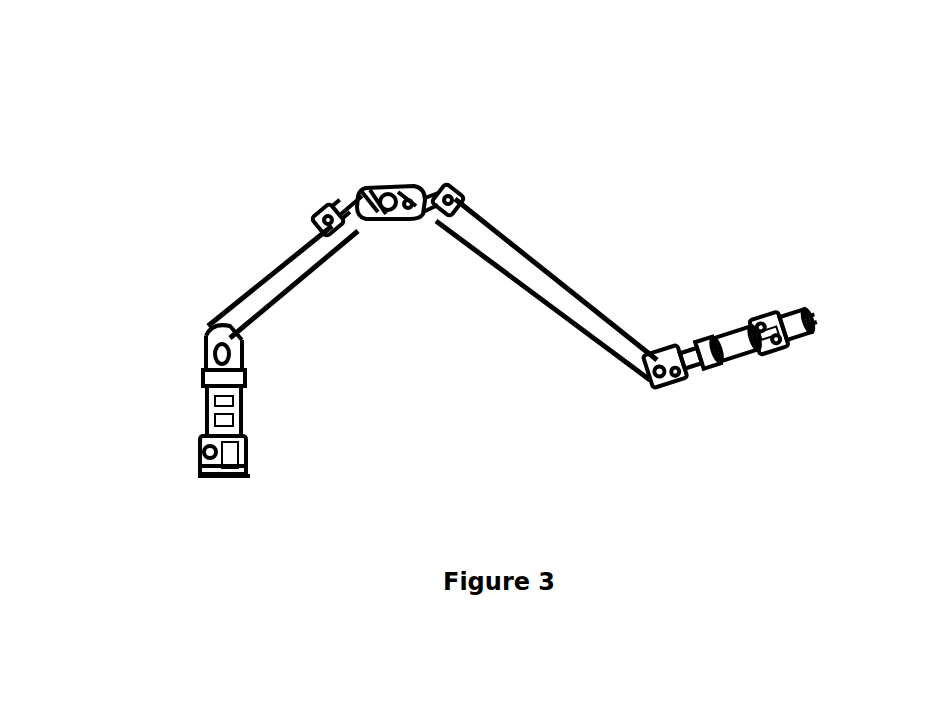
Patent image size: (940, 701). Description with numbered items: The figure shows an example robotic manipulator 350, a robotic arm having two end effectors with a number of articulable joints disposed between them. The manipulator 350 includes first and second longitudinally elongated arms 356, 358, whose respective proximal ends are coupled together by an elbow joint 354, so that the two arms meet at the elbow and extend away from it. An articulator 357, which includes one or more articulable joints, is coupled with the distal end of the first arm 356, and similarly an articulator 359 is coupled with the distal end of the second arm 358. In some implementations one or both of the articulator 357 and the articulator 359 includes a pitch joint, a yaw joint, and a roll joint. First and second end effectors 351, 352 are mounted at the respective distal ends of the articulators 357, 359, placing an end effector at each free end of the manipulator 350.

The manipulator 350 is at (258, 96).
The first end effector 351 is at (238, 478).
The second end effector 352 is at (812, 320).
The elbow joint 354 is at (393, 186).
The first longitudinally elongated arm 356 is at (292, 272).
The articulator 357 is at (183, 327).
The second longitudinally elongated arm 358 is at (557, 290).
The articulator 359 is at (825, 362).